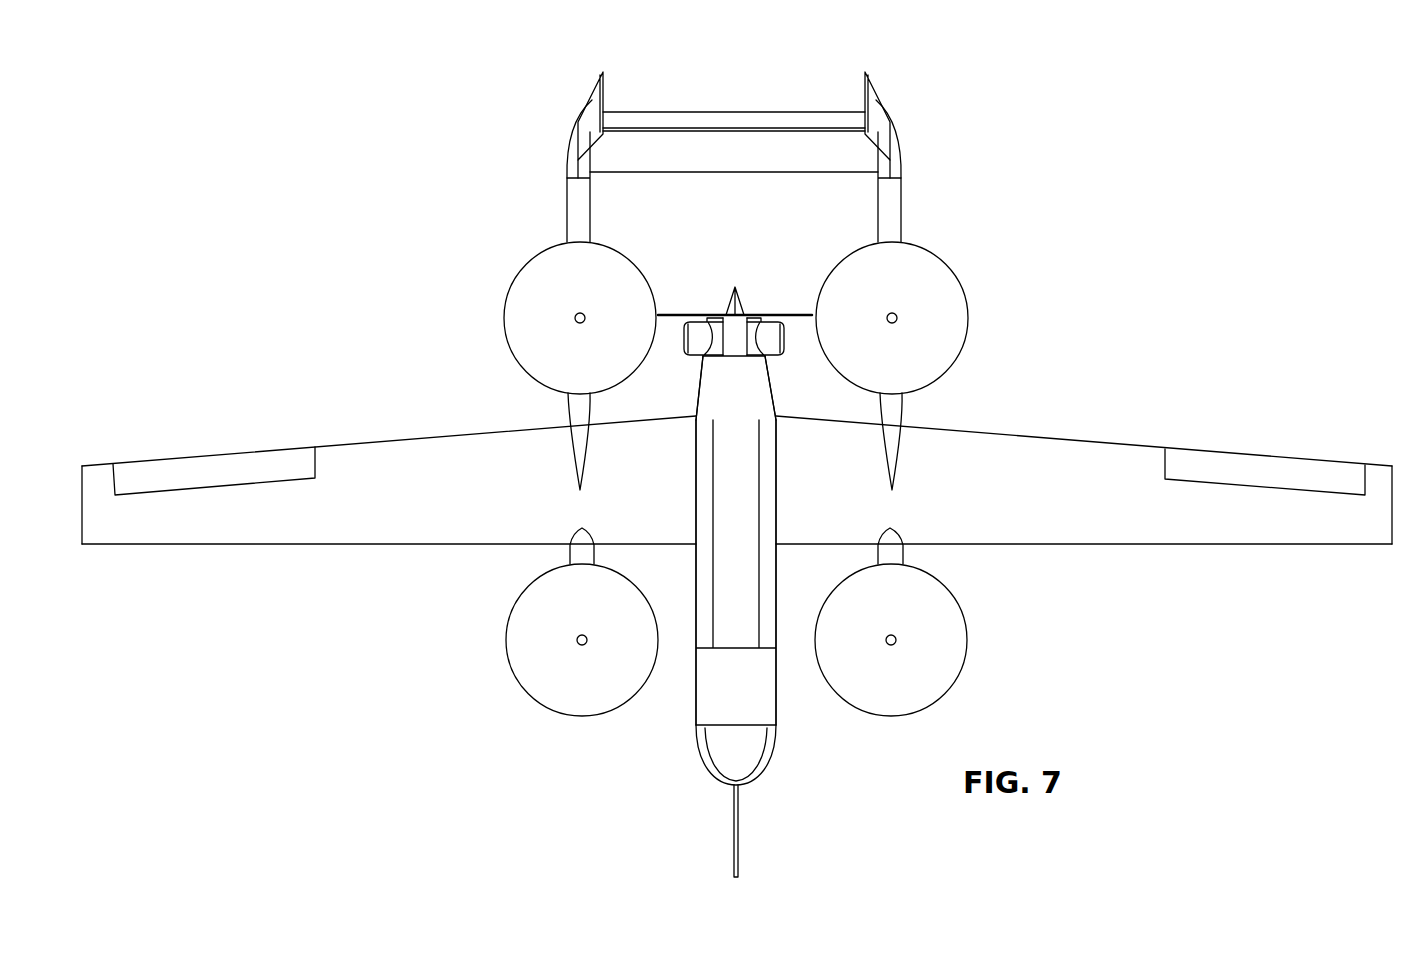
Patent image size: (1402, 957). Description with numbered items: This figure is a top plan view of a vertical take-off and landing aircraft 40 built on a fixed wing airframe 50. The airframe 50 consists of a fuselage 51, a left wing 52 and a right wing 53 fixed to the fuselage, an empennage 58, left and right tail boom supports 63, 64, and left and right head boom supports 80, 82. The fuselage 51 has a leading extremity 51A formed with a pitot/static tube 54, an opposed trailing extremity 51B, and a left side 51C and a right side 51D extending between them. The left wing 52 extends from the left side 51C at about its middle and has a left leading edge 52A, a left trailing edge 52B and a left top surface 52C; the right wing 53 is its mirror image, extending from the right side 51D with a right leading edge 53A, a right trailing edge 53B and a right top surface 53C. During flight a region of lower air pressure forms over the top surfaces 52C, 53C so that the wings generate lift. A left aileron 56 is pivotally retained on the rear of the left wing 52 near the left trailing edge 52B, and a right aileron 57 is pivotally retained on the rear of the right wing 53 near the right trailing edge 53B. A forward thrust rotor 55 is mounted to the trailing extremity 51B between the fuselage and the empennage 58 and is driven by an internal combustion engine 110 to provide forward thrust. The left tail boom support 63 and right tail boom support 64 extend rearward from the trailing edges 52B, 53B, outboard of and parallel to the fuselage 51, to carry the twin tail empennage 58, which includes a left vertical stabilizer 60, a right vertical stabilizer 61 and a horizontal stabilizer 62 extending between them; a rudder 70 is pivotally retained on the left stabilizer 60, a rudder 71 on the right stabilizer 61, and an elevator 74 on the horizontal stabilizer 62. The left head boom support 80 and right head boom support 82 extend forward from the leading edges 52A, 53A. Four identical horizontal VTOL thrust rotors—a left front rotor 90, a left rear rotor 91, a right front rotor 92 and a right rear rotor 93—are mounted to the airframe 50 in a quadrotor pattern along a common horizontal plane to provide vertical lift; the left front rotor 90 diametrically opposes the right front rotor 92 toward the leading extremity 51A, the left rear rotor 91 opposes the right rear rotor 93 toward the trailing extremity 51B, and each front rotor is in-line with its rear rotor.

The VTOL aircraft 40 is at (737, 473).
The airframe 50 is at (737, 489).
The fuselage 51 is at (745, 564).
The leading extremity 51A is at (718, 782).
The trailing extremity 51B is at (708, 372).
The left side 51C is at (778, 595).
The right side 51D is at (700, 572).
The left wing 52 is at (1030, 447).
The left leading edge 52A is at (1095, 545).
The left trailing edge 52B is at (990, 435).
The left top surface 52C is at (1055, 506).
The right wing 53 is at (282, 532).
The right leading edge 53A is at (325, 545).
The right trailing edge 53B is at (335, 447).
The right top surface 53C is at (373, 483).
The pitot/static tube 54 is at (737, 848).
The forward thrust rotor 55 is at (777, 315).
The left aileron 56 is at (1215, 462).
The right aileron 57 is at (185, 462).
The empennage 58 is at (749, 156).
The left vertical stabilizer 60 is at (877, 137).
The right vertical stabilizer 61 is at (597, 118).
The horizontal stabilizer 62 is at (685, 158).
The left tail boom support 63 is at (895, 224).
The right tail boom support 64 is at (572, 203).
The rudder 70 is at (883, 100).
The rudder 71 is at (585, 104).
The elevator 74 is at (733, 122).
The left head boom support 80 is at (903, 553).
The right head boom support 82 is at (590, 548).
The left front VTOL thrust rotor 90 is at (960, 623).
The left rear VTOL thrust rotor 91 is at (968, 298).
The right front VTOL thrust rotor 92 is at (518, 660).
The right rear VTOL thrust rotor 93 is at (522, 283).
The internal combustion engine 110 is at (697, 333).